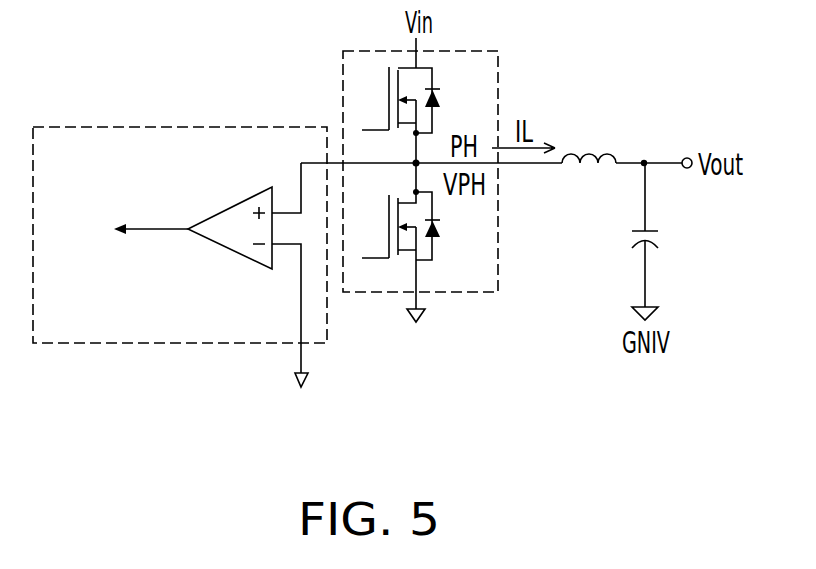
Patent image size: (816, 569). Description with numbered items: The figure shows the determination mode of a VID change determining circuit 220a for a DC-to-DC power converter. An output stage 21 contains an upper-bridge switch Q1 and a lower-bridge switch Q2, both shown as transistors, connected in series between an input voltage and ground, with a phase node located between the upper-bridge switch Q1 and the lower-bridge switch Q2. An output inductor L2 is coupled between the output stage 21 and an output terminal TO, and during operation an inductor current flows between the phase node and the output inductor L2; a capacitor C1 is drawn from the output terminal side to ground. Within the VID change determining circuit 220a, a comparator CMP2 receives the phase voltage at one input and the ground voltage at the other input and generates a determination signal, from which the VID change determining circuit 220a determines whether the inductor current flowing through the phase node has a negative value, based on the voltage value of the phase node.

The output stage 21 is at (499, 77).
The VID change determining circuit 220a is at (215, 124).
The comparator CMP2 is at (232, 203).
The upper-bridge switch Q1 is at (397, 115).
The lower-bridge switch Q2 is at (396, 236).
The output inductor L2 is at (589, 138).
The output capacitor C1 is at (629, 241).
The output terminal TO is at (687, 157).